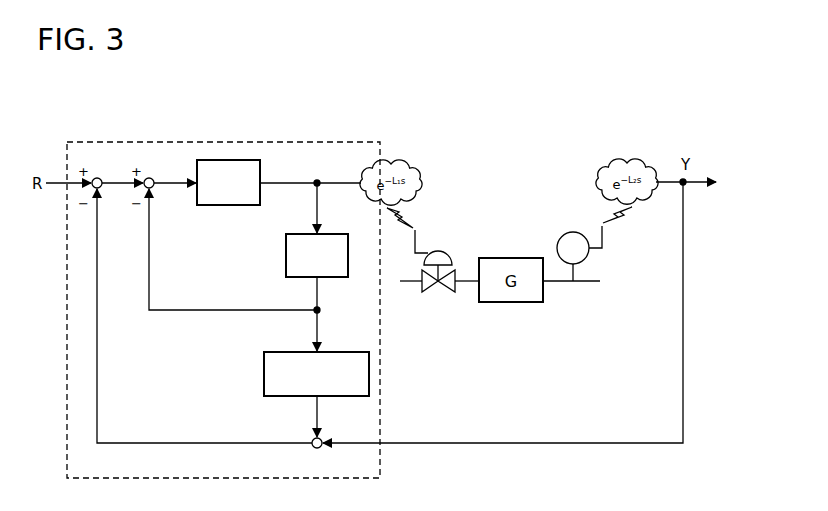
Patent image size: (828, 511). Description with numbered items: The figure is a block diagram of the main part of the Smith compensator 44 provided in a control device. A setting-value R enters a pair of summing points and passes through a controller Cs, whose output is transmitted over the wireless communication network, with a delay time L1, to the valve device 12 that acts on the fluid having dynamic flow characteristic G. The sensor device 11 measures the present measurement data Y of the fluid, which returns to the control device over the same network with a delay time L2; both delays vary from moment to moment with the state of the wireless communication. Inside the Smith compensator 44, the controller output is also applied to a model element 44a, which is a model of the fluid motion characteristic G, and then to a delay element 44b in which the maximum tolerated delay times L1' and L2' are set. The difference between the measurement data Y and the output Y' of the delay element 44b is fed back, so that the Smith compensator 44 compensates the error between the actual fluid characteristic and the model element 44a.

The Smith compensator 44 is at (300, 141).
The model element 44a is at (286, 255).
The delay element 44b is at (264, 372).
The valve device 12 is at (438, 252).
The sensor device 11 is at (573, 232).